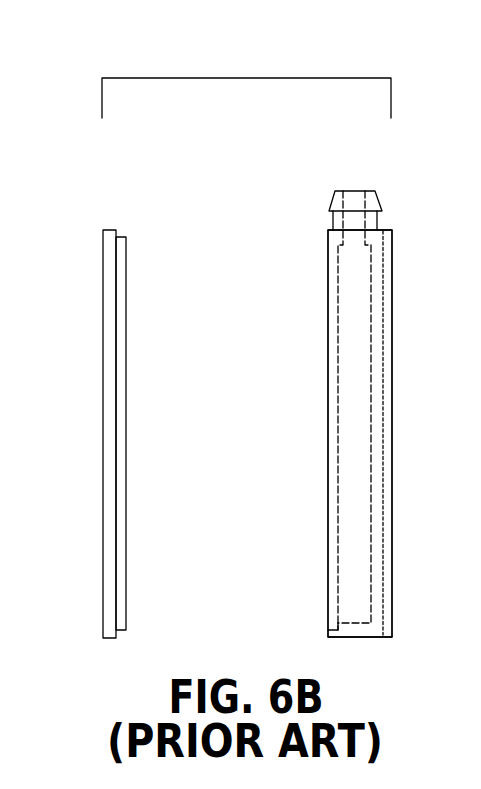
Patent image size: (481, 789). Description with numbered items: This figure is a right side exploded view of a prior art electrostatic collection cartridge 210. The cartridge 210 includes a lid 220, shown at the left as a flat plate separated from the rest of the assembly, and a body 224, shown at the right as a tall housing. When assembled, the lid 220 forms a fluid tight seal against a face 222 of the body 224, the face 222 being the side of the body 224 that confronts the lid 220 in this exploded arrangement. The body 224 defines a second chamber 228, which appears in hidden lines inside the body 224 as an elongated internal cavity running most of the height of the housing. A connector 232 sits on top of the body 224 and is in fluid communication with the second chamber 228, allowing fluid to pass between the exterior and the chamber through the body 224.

The electrostatic collection cartridge 210 is at (247, 78).
The lid 220 is at (103, 592).
The face 222 is at (328, 418).
The body 224 is at (400, 235).
The second chamber 228 is at (362, 342).
The connector 232 is at (378, 205).